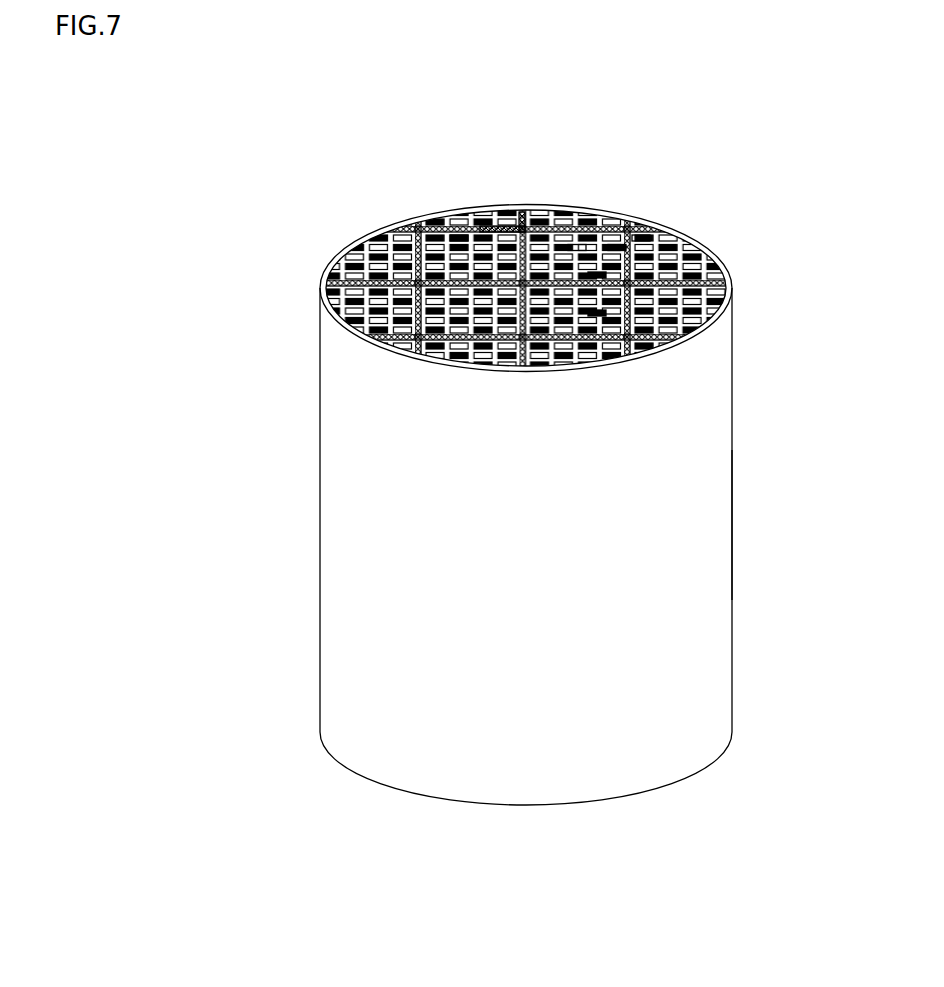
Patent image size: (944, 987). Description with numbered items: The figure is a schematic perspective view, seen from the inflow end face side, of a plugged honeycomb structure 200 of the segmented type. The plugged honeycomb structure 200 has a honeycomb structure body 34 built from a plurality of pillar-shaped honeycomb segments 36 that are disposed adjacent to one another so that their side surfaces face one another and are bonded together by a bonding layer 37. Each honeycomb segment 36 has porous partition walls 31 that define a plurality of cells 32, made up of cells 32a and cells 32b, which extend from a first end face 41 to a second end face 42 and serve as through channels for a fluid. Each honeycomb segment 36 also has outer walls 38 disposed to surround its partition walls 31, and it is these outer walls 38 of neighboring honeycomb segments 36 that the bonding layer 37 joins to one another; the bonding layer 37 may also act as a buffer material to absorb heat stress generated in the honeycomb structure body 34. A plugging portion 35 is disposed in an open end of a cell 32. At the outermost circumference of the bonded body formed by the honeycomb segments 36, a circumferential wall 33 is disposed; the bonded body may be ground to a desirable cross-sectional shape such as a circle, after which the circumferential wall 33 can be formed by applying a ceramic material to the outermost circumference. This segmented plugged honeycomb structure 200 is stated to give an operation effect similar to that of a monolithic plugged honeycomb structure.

The plugged honeycomb structure 200 is at (806, 89).
The partition walls 31 is at (577, 248).
The cells 32 is at (676, 189).
The cells 32a is at (645, 227).
The cells 32b is at (618, 250).
The circumferential wall 33 is at (705, 427).
The honeycomb structure body 34 is at (737, 517).
The plugging portion 35 is at (454, 234).
The honeycomb segments 36 is at (593, 313).
The bonding layer 37 is at (493, 226).
The outer walls 38 is at (470, 343).
The first end face 41 is at (352, 232).
The second end face 42 is at (330, 766).